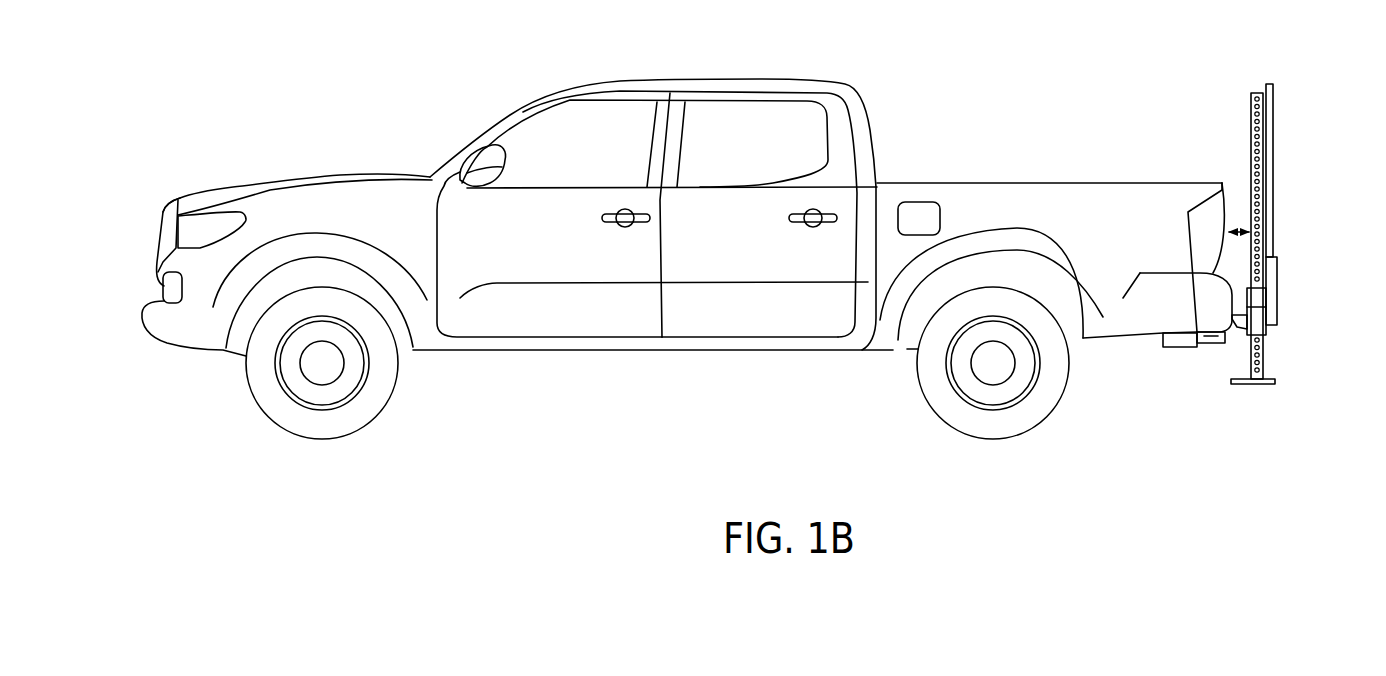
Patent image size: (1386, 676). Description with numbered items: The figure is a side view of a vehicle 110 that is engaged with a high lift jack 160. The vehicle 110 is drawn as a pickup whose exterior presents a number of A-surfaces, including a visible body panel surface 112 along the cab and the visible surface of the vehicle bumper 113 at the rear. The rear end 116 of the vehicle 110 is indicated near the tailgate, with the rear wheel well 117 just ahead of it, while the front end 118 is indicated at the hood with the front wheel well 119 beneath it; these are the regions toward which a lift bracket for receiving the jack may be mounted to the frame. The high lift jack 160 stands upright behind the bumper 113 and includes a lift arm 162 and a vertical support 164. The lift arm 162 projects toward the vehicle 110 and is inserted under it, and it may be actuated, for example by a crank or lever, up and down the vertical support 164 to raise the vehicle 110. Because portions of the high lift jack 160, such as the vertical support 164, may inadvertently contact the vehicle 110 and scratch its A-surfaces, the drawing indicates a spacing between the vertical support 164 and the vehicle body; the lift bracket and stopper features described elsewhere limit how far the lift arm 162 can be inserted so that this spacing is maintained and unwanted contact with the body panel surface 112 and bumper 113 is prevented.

The vehicle 110 is at (221, 469).
The visible body panel surface 112 is at (676, 250).
The vehicle bumper 113 is at (1190, 362).
The rear end 116 is at (1193, 170).
The rear wheel well 117 is at (905, 338).
The front end 118 is at (143, 152).
The front wheel well 119 is at (405, 343).
The high lift jack 160 is at (1285, 158).
The lift arm 162 is at (1233, 340).
The vertical support 164 is at (1275, 357).